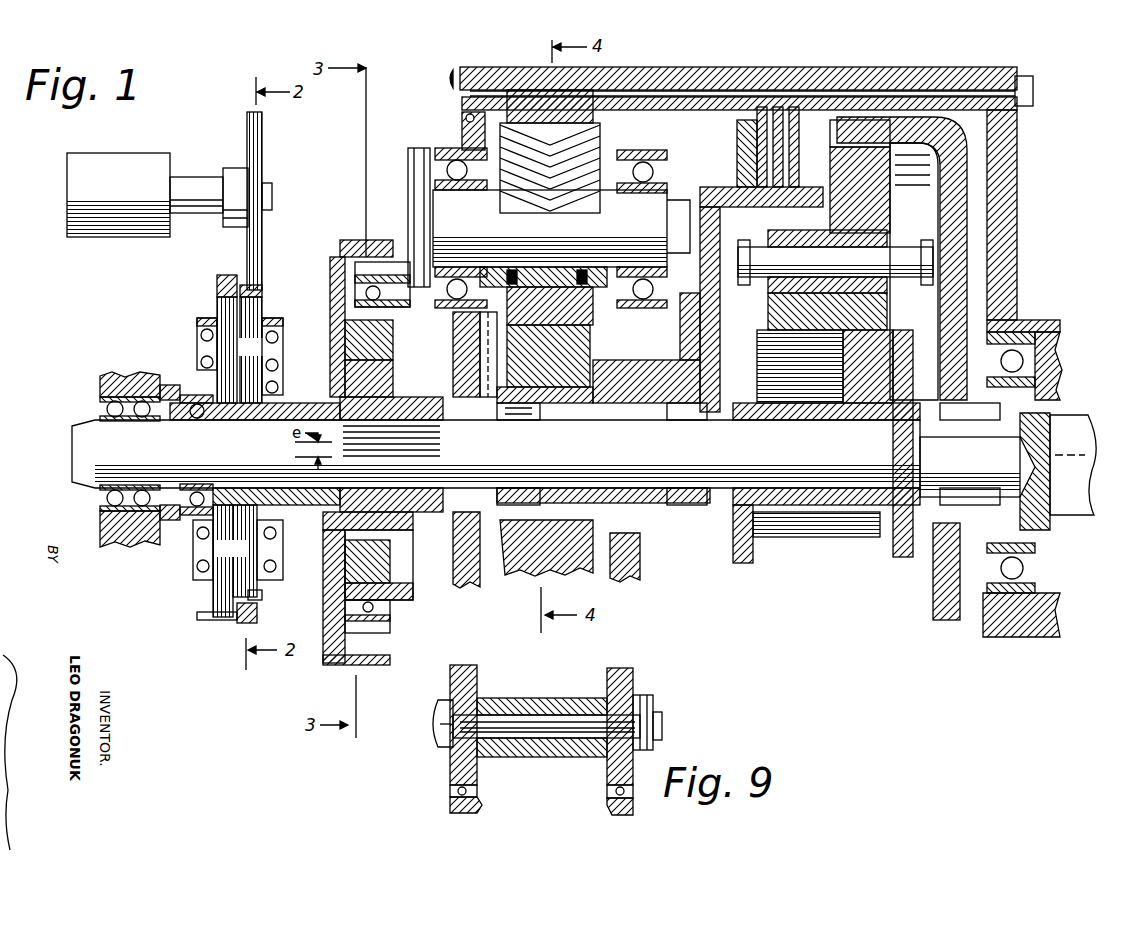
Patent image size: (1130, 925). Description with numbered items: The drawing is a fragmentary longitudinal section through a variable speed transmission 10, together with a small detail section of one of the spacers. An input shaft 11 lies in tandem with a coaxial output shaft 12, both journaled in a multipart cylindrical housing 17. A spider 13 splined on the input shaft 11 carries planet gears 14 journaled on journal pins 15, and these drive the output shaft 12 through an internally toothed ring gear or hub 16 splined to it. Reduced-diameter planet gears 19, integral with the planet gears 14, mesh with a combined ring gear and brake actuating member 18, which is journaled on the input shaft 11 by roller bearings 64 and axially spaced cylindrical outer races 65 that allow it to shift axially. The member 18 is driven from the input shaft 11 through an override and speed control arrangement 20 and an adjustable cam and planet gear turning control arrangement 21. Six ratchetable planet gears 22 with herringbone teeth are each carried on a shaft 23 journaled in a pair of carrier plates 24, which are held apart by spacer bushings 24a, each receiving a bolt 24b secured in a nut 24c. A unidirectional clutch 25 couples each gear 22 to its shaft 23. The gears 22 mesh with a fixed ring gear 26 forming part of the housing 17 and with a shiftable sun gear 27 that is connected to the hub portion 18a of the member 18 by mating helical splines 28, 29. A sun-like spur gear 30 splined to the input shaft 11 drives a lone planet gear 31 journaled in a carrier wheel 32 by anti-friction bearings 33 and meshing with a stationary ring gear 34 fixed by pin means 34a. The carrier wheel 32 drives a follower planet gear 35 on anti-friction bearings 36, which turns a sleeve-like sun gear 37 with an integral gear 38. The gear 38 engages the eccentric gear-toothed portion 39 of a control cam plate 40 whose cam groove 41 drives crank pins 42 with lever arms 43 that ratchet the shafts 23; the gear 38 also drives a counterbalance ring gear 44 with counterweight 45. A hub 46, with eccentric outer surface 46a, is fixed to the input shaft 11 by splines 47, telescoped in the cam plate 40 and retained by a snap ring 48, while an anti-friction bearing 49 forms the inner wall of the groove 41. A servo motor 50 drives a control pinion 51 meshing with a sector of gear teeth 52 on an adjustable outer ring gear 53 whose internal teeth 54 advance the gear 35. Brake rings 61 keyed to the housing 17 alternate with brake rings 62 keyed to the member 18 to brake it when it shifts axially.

In FIG. 1, the variable speed transmission 10 is at (1030, 154).
In FIG. 1, the input shaft 11 is at (582, 450).
In FIG. 1, the output shaft 12 is at (1080, 444).
In FIG. 1, the spider 13 is at (757, 558).
In FIG. 1, the planet gears 14 is at (868, 196).
In FIG. 1, the journal pins 15 is at (830, 266).
In FIG. 1, the internally toothed ring gear or hub 16 is at (952, 223).
In FIG. 1, the housing 17 is at (120, 373).
In FIG. 1, the ring gear and brake actuating member 18 is at (720, 566).
In FIG. 1, the hub portion 18a is at (648, 403).
In FIG. 1, the planet gears 19 is at (807, 308).
In FIG. 1, the override and speed control arrangement 20 is at (221, 350).
In FIG. 1, the cam and planet gear turning control arrangement 21 is at (263, 250).
In FIG. 1, the ratchetable planet gears 22 is at (558, 311).
In FIG. 1, the shaft 23 is at (470, 220).
In FIG. 1, the carrier plates 24 is at (464, 140).
In FIG. 9, the carrier plates 24 is at (466, 668).
In FIG. 9, the spacer bushing 24a is at (530, 698).
In FIG. 9, the bolt 24b is at (560, 742).
In FIG. 9, the nut 24c is at (650, 712).
In FIG. 1, the unidirectional clutch 25 is at (556, 284).
In FIG. 1, the fixed ring gear 26 is at (561, 109).
In FIG. 1, the sun gear 27 is at (535, 363).
In FIG. 1, the helical splines 28 is at (540, 386).
In FIG. 1, the helical splines 29 is at (600, 580).
In FIG. 1, the sun-like spur gear 30 is at (230, 419).
In FIG. 1, the lone planet gear 31 is at (240, 350).
In FIG. 1, the carrier wheel 32 is at (196, 512).
In FIG. 1, the anti-friction bearings 33 is at (160, 338).
In FIG. 1, the stationary ring gear 34 is at (235, 626).
In FIG. 1, the pin means 34a is at (197, 613).
In FIG. 1, the follower planet gear 35 is at (237, 551).
In FIG. 1, the anti-friction bearings 36 is at (195, 563).
In FIG. 1, the sleeve-like sun gear 37 is at (250, 482).
In FIG. 1, the gear 38 is at (326, 398).
In FIG. 1, the eccentric epicyclic gear-toothed portion 39 is at (328, 376).
In FIG. 1, the control cam disc or plate 40 is at (328, 335).
In FIG. 1, the cam groove 41 is at (372, 651).
In FIG. 1, the crank pins 42 is at (348, 270).
In FIG. 1, the lever arms 43 is at (420, 150).
In FIG. 1, the counterbalance ring gear 44 is at (370, 380).
In FIG. 1, the counterweight 45 is at (368, 343).
In FIG. 1, the hub 46 is at (425, 402).
In FIG. 1, the eccentric outer peripheral surface 46a is at (340, 302).
In FIG. 1, the splines 47 is at (437, 446).
In FIG. 1, the snap ring 48 is at (410, 582).
In FIG. 1, the anti-friction bearing 49 is at (388, 290).
In FIG. 1, the servo motor 50 is at (190, 184).
In FIG. 1, the control pinion 51 is at (262, 158).
In FIG. 1, the sector of gear teeth 52 is at (262, 282).
In FIG. 1, the adjustable outer ring gear 53 is at (262, 292).
In FIG. 1, the internal teeth 54 is at (262, 597).
In FIG. 1, the brake rings 61 is at (772, 130).
In FIG. 1, the brake rings 62 is at (776, 148).
In FIG. 1, the roller bearings 64 is at (523, 482).
In FIG. 1, the cylindrical outer races 65 is at (553, 500).